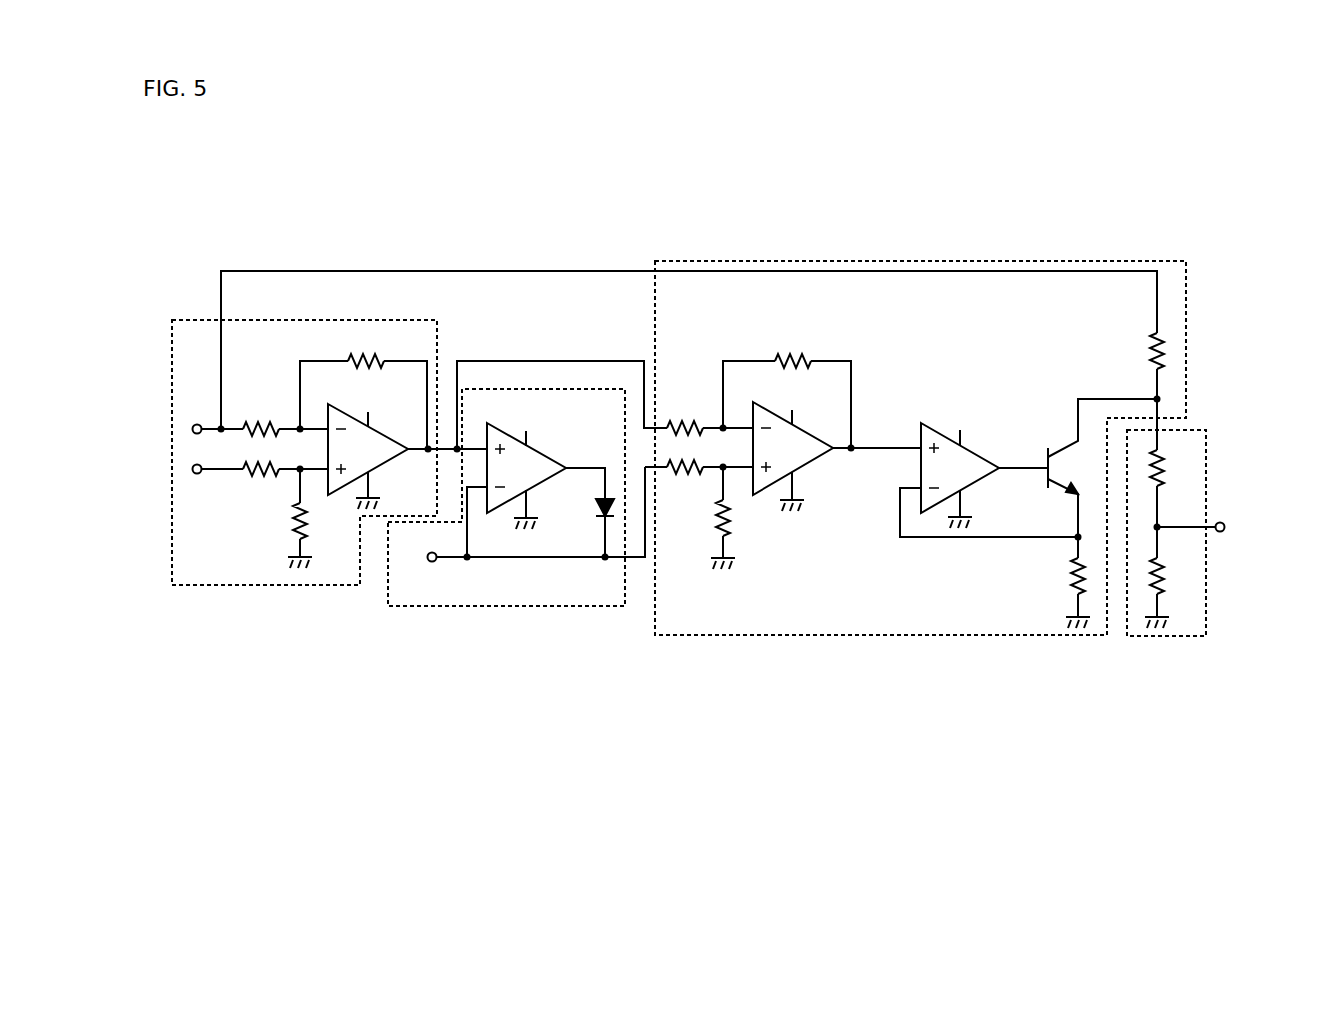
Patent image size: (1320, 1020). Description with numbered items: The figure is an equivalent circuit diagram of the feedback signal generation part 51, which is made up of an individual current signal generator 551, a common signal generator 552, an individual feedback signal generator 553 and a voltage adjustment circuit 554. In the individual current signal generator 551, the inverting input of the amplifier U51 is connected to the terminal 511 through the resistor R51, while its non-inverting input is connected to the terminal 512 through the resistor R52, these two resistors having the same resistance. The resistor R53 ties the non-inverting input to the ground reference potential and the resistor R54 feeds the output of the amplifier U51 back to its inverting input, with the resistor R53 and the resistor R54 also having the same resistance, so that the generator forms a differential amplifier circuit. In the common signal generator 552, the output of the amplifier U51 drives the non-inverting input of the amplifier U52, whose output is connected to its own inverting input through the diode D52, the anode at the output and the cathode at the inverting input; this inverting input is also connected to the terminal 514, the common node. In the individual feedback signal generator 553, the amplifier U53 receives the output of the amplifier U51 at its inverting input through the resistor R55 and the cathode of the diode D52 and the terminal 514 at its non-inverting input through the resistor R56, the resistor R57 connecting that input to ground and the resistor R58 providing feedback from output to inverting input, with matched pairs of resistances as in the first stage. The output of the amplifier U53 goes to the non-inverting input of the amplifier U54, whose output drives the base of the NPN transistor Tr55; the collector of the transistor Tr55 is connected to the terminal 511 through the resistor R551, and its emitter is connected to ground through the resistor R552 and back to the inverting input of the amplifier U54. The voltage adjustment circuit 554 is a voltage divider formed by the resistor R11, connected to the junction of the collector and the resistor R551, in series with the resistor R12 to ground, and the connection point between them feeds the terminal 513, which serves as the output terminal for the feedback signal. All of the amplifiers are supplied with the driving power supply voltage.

The feedback signal generation part 51 is at (1125, 242).
The individual current signal generator 551 is at (427, 319).
The common signal generator 552 is at (598, 607).
The individual feedback signal generator 553 is at (695, 637).
The voltage adjustment circuit 554 is at (1150, 638).
The terminal 511 is at (197, 424).
The terminal 512 is at (197, 474).
The terminal 513 is at (1223, 522).
The terminal 514 is at (432, 562).
The resistor R51 is at (285, 417).
The resistor R52 is at (285, 484).
The resistor R53 is at (317, 518).
The resistor R54 is at (363, 389).
The resistor R55 is at (605, 405).
The resistor R56 is at (699, 482).
The resistor R57 is at (742, 518).
The resistor R58 is at (787, 388).
The resistor R551 is at (1121, 391).
The resistor R552 is at (1054, 582).
The resistor R11 is at (1176, 504).
The resistor R12 is at (1173, 593).
The amplifier U51 is at (407, 447).
The amplifier U52 is at (536, 480).
The amplifier U53 is at (837, 447).
The amplifier U54 is at (989, 471).
The diode D52 is at (586, 528).
The transistor Tr55 is at (1051, 470).